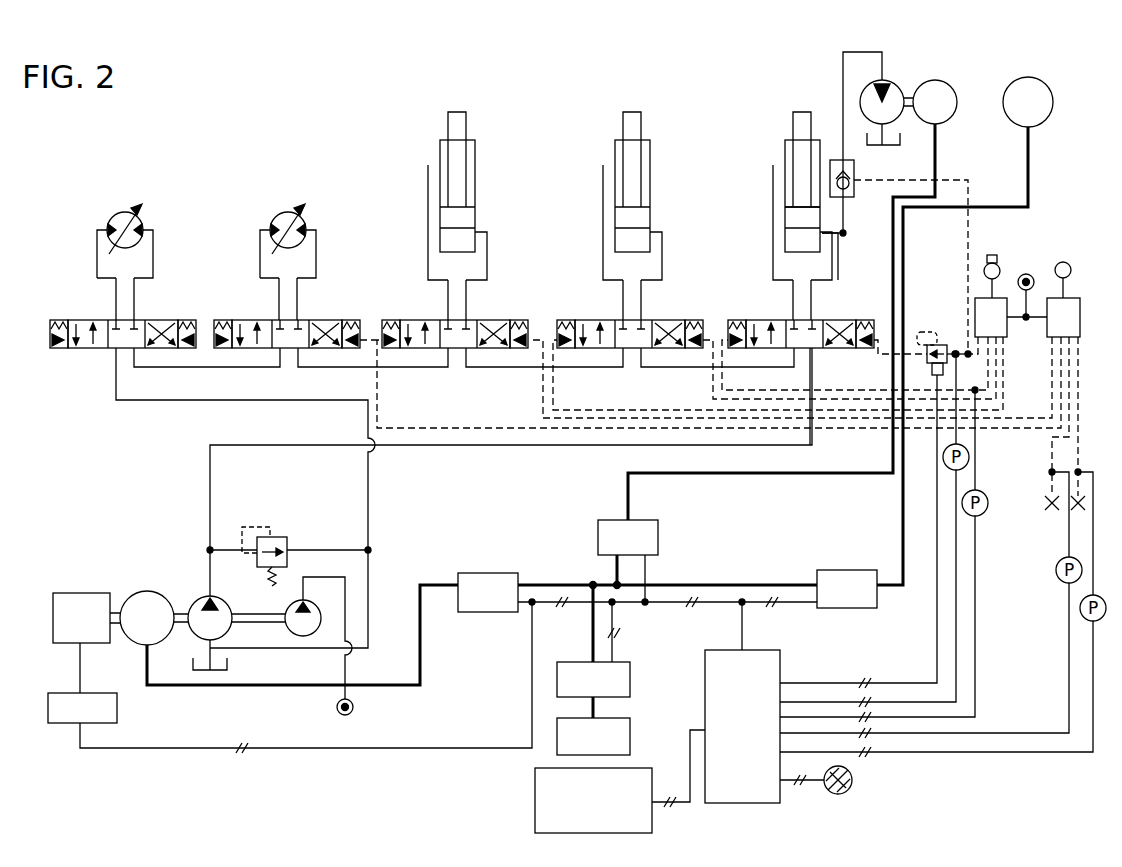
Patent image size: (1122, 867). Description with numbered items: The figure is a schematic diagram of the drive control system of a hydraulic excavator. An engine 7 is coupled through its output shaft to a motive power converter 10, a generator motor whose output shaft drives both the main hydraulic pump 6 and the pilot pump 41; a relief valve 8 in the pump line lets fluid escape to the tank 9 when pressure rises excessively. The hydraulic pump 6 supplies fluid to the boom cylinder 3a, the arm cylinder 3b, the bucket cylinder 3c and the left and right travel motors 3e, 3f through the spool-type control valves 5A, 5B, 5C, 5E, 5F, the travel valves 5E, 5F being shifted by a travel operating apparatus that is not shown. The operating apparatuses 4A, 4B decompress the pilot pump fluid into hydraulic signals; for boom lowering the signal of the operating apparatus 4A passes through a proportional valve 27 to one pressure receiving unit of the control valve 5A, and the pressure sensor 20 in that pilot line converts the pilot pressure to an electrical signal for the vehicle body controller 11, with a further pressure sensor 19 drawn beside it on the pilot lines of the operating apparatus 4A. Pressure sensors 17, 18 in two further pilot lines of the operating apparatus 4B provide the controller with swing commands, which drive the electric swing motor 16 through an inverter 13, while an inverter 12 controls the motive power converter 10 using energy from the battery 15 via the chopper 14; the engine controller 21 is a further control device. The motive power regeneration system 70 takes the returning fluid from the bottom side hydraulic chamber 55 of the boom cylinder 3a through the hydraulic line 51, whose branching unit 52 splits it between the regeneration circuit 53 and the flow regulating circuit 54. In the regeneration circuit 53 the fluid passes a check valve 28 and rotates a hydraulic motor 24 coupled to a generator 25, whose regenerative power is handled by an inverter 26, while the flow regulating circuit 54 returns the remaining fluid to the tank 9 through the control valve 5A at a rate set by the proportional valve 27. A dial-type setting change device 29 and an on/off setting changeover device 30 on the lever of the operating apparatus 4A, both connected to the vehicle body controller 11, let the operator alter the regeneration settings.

The boom cylinder 3a is at (784, 155).
The arm cylinder 3b is at (617, 140).
The bucket cylinder 3c is at (442, 140).
The travel motor 3e is at (274, 212).
The travel motor 3f is at (112, 212).
The control valve 5A is at (770, 318).
The control valve 5B is at (662, 318).
The control valve 5C is at (492, 318).
The control valve 5E is at (322, 318).
The control valve 5F is at (162, 318).
The hydraulic pump 6 is at (198, 596).
The engine 7 is at (92, 593).
The relief valve 8 is at (283, 516).
The tank 9 is at (206, 672).
The motive power converter 10 is at (130, 592).
The vehicle body controller 11 is at (782, 660).
The inverter 12 is at (488, 613).
The inverter 13 is at (840, 570).
The chopper 14 is at (631, 680).
The battery 15 is at (631, 737).
The swing motor 16 is at (1038, 78).
The pressure sensor 17 is at (1056, 571).
The pressure sensor 18 is at (1080, 609).
The pressure sensor 19 is at (988, 504).
The pressure sensor 20 is at (969, 458).
The engine controller 21 is at (66, 724).
The hydraulic motor 24 is at (887, 81).
The generator 25 is at (940, 81).
The inverter 26 is at (660, 528).
The proportional valve 27 is at (934, 344).
The check valve 28 is at (856, 165).
The setting change device 29 is at (853, 780).
The setting changeover device 30 is at (988, 254).
The operating apparatus 4A is at (996, 298).
The operating apparatus 4B is at (1075, 298).
The pilot pump 41 is at (300, 640).
The hydraulic line 51 is at (829, 240).
The branching unit 52 is at (845, 233).
The regeneration circuit 53 is at (836, 68).
The flow regulating circuit 54 is at (832, 352).
The bottom side hydraulic chamber 55 is at (796, 238).
The motive power regeneration system 70 is at (804, 88).